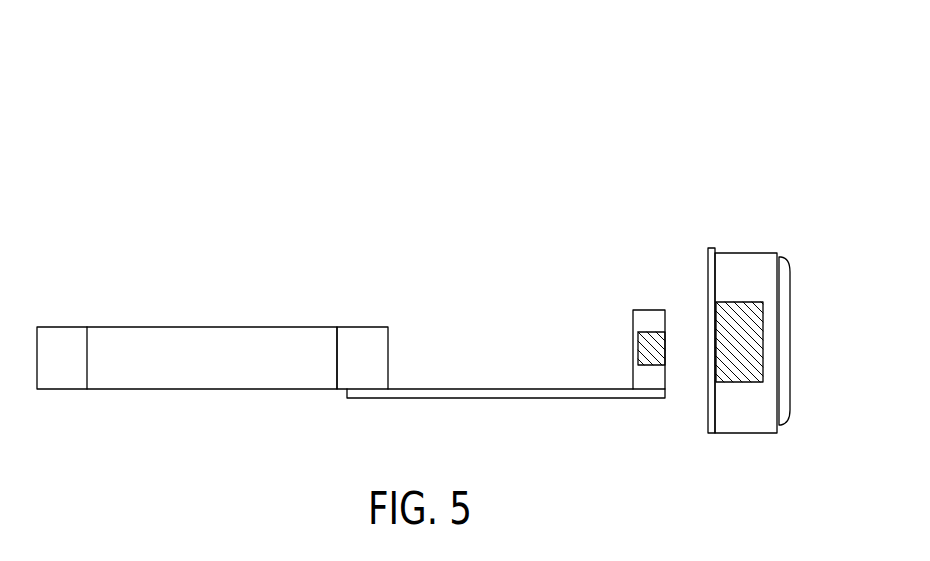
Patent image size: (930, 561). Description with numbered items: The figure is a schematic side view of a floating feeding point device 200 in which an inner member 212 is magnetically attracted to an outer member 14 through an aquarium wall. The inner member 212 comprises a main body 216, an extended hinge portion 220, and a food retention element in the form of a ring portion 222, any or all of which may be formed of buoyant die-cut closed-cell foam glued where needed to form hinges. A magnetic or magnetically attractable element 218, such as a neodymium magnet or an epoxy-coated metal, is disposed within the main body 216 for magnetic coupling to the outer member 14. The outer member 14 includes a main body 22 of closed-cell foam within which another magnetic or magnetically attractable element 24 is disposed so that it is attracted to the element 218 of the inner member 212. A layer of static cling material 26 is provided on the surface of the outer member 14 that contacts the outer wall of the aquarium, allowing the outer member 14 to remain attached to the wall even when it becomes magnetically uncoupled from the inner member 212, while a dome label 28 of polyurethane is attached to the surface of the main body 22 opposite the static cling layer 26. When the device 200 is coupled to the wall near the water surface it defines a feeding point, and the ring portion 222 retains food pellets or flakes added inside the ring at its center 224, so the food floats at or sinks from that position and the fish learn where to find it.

The floating feeding point device 200 is at (315, 103).
The inner member 212 is at (590, 246).
The main body 216 is at (651, 318).
The magnetic or magnetically attractable element 218 is at (652, 352).
The extended hinge portion 220 is at (497, 391).
The ring portion 222 is at (359, 335).
The center of ring portion 224 is at (188, 346).
The outer member 14 is at (745, 168).
The main body 22 is at (757, 258).
The magnetic or magnetically attractable element 24 is at (748, 348).
The static cling adhesive layer 26 is at (711, 248).
The dome label 28 is at (785, 275).